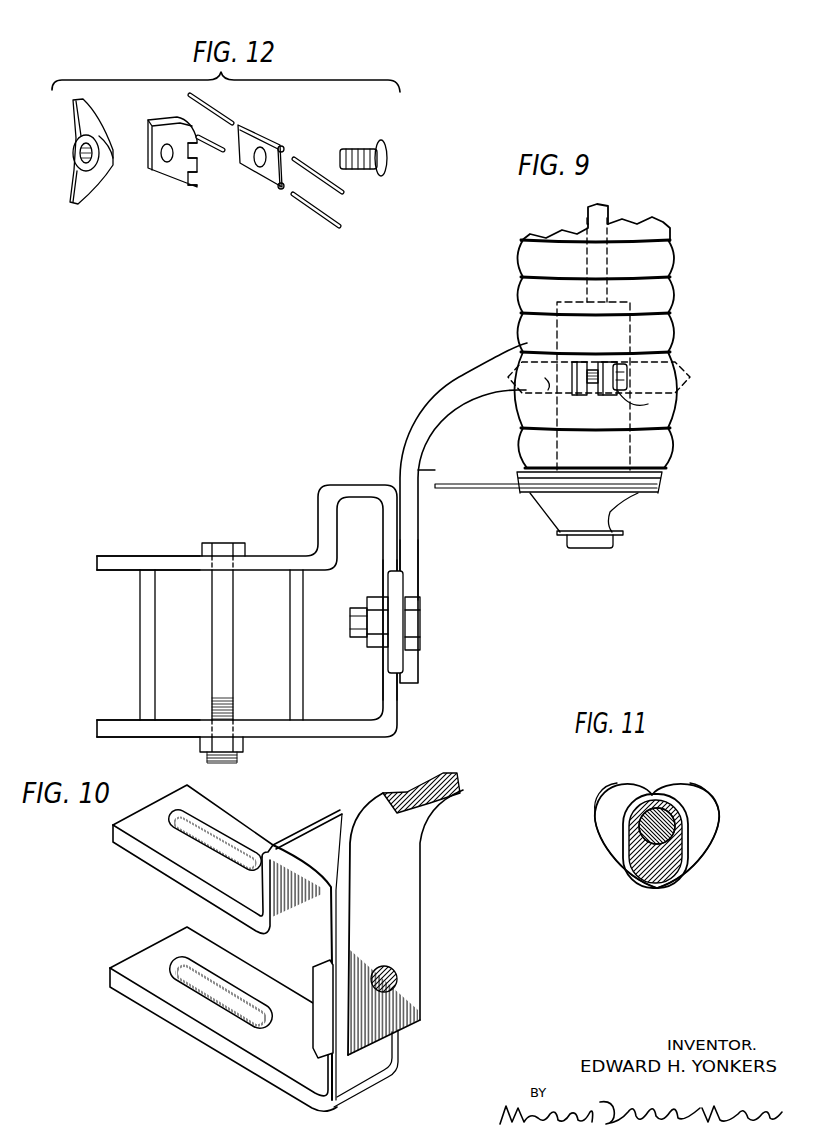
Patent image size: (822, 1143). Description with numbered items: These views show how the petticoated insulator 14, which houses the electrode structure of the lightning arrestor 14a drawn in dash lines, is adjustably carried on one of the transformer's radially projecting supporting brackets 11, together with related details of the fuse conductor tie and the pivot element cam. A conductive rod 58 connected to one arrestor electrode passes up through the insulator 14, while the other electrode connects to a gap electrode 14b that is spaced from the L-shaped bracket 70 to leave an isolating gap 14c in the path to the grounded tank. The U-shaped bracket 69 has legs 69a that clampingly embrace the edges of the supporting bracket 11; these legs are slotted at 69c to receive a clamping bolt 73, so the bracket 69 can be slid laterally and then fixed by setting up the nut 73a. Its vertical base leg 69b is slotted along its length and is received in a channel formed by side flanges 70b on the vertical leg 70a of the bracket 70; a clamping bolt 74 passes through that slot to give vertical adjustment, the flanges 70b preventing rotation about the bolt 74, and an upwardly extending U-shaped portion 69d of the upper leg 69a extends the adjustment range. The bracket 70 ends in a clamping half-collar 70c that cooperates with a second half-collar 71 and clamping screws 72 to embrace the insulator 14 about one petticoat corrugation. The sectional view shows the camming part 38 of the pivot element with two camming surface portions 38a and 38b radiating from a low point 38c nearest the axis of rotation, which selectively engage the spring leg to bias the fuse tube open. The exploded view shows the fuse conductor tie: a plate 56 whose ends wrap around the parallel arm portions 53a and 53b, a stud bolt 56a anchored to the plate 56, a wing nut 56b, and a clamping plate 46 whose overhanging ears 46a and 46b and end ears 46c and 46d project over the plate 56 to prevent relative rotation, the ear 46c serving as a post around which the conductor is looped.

In FIG. 9, the supporting bracket 11 is at (156, 656).
In FIG. 9, the petticoated insulator 14 is at (508, 290).
In FIG. 9, the lightning arrestor 14a is at (632, 340).
In FIG. 9, the gap electrode 14b is at (510, 490).
In FIG. 9, the isolating gap 14c is at (424, 473).
In FIG. 11, the camming part 38 is at (687, 882).
In FIG. 11, the camming surface portion 38a is at (617, 788).
In FIG. 11, the camming surface portion 38b is at (700, 786).
In FIG. 11, the low point 38c is at (657, 795).
In FIG. 12, the clamping plate 46 is at (170, 170).
In FIG. 12, the overhanging ear 46a is at (184, 118).
In FIG. 12, the overhanging ear 46b is at (197, 182).
In FIG. 12, the end ear 46c is at (146, 142).
In FIG. 12, the end ear 46d is at (194, 163).
In FIG. 12, the arm portion 53a is at (316, 221).
In FIG. 12, the arm portion 53b is at (344, 194).
In FIG. 12, the plate 56 is at (289, 116).
In FIG. 12, the stud bolt 56a is at (377, 141).
In FIG. 12, the wing nut 56b is at (85, 184).
In FIG. 9, the conductive rod 58 is at (608, 210).
In FIG. 9, the bracket 69 is at (398, 707).
In FIG. 9, the leg 69a is at (127, 528).
In FIG. 9, the vertical base leg 69b is at (400, 690).
In FIG. 10, the slot 69c is at (213, 847).
In FIG. 10, the U-shaped portion 69d is at (342, 812).
In FIG. 9, the bracket 70 is at (430, 397).
In FIG. 9, the vertical leg of bracket 70a is at (419, 543).
In FIG. 9, the side flange 70b is at (387, 668).
In FIG. 10, the side flange 70b is at (312, 990).
In FIG. 9, the clamping half-collar 70c is at (540, 398).
In FIG. 9, the clamping half-collar 71 is at (692, 380).
In FIG. 9, the clamping screw 72 is at (650, 408).
In FIG. 9, the clamping bolt 73 is at (233, 612).
In FIG. 9, the nut 73a is at (240, 754).
In FIG. 9, the clamping bolt 74 is at (421, 619).
In FIG. 10, the clamping bolt 74 is at (397, 980).